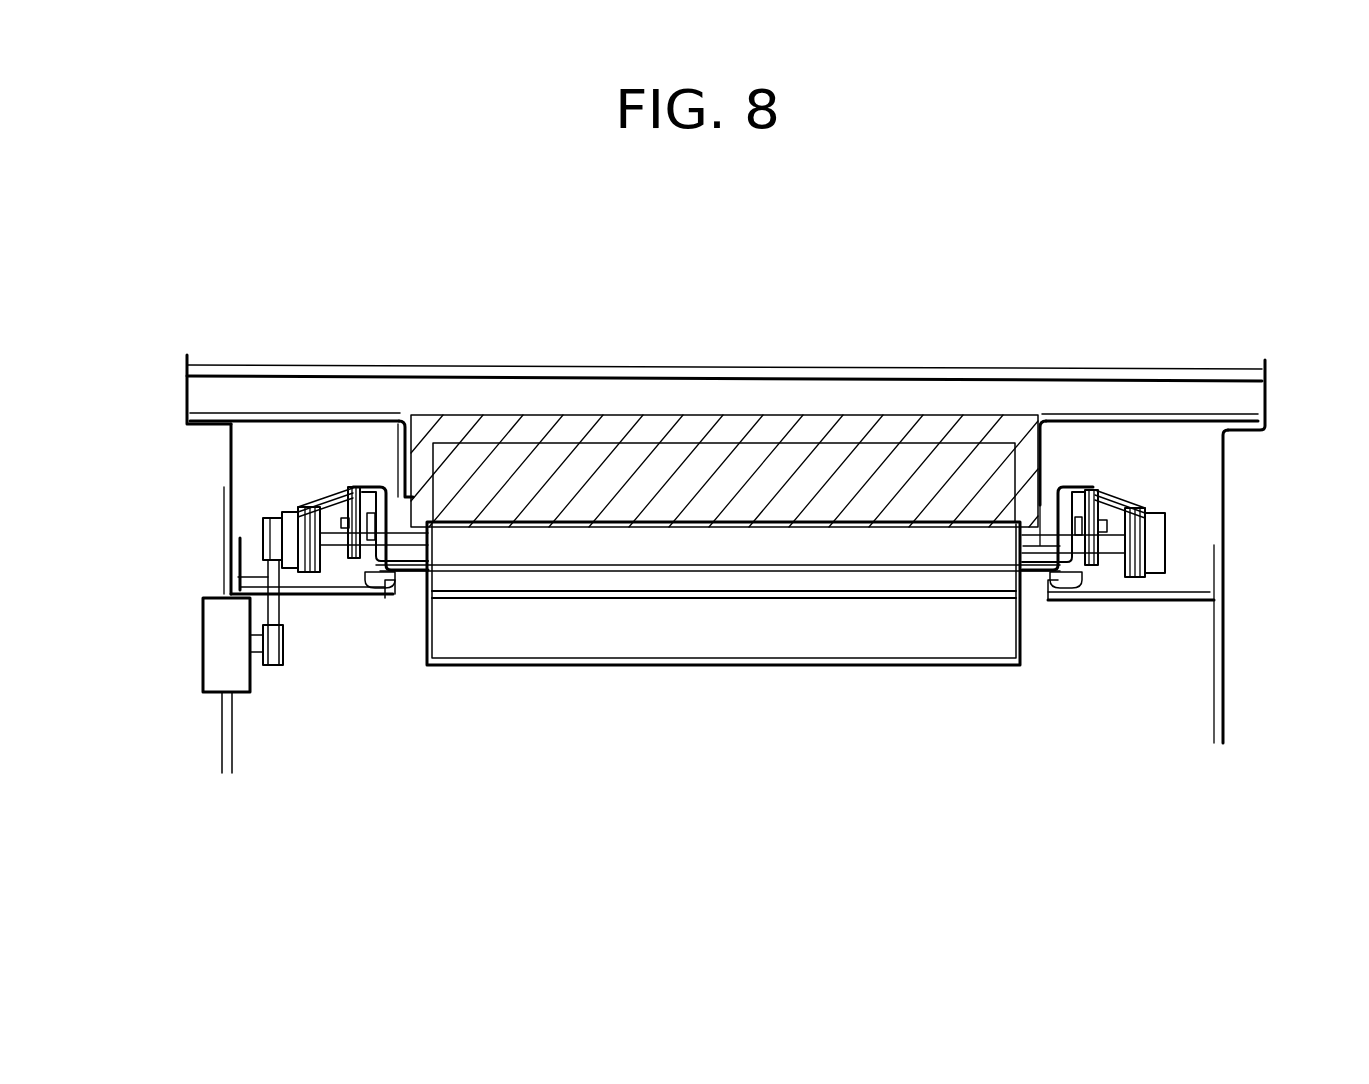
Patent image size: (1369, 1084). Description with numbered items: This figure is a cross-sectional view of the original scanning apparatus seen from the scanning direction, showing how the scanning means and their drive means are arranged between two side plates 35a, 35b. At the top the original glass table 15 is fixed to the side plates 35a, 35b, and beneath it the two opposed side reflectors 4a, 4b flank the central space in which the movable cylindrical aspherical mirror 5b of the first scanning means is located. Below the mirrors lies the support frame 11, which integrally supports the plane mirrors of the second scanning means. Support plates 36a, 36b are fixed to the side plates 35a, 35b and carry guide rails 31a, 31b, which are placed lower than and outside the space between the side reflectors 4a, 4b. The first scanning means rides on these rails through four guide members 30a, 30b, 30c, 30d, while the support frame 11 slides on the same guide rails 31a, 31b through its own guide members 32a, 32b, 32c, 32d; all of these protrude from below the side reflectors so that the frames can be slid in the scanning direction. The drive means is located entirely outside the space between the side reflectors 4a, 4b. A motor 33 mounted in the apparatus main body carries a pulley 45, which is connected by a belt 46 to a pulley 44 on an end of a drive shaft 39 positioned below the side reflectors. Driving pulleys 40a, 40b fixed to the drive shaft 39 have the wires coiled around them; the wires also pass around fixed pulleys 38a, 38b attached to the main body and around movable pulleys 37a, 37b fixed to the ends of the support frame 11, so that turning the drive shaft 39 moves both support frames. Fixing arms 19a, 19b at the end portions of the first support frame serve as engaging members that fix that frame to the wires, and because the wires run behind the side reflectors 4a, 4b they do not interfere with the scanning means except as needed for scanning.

The original glass table 15 is at (678, 376).
The side reflector 4a is at (407, 420).
The side reflector 4b is at (1043, 543).
The movable cylindrical aspherical mirror 5b is at (762, 452).
The support frame 11 is at (637, 666).
The side plate 35a is at (223, 532).
The side plate 35b is at (1222, 545).
The support plate 36a is at (313, 598).
The support plate 36b is at (1175, 603).
The belt 46 is at (238, 540).
The motor 33 is at (207, 658).
The pulley 44 is at (268, 525).
The pulley 45 is at (283, 665).
The driving pulley 40a is at (288, 515).
The driving pulley 40b is at (1160, 530).
The fixed pulley 38a is at (323, 507).
The fixed pulley 38b is at (1142, 507).
The movable pulley 37a is at (375, 487).
The movable pulley 37b is at (1090, 487).
The fixing arm 19a is at (388, 485).
The fixing arm 19b is at (1098, 487).
The drive shaft 39 is at (1073, 488).
The guide member 30a is at (423, 642).
The guide member 30b is at (407, 590).
The guide member 30c is at (1045, 632).
The guide member 30d is at (1040, 593).
The guide member 32a is at (435, 687).
The guide member 32b is at (385, 588).
The guide member 32c is at (1096, 681).
The guide member 32d is at (1067, 593).
The guide rail 31a is at (363, 598).
The guide rail 31b is at (1085, 593).